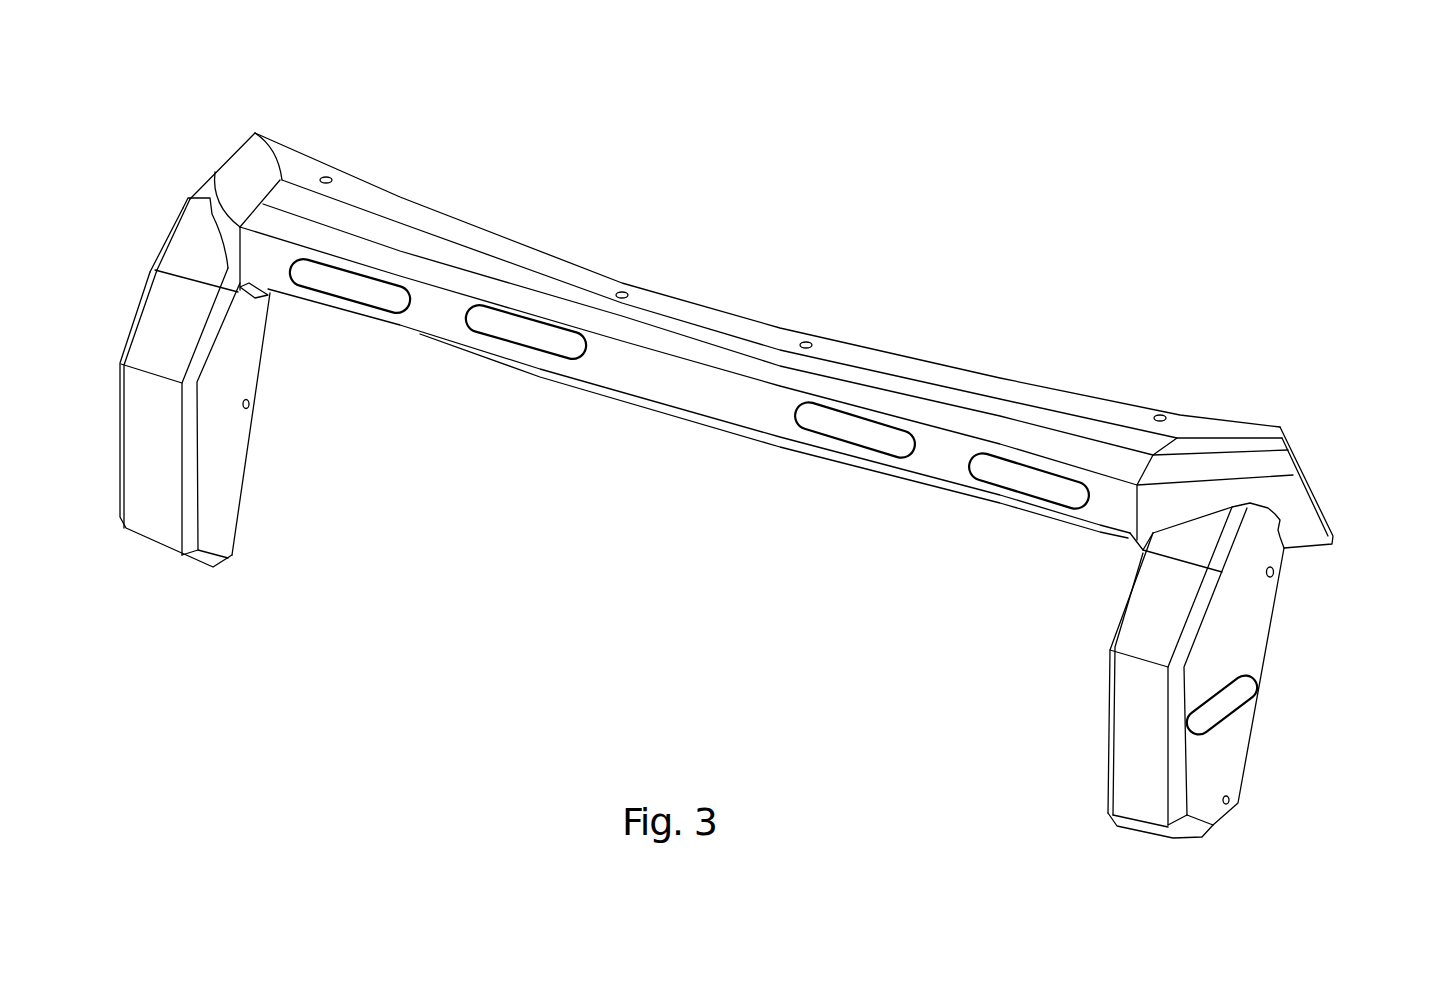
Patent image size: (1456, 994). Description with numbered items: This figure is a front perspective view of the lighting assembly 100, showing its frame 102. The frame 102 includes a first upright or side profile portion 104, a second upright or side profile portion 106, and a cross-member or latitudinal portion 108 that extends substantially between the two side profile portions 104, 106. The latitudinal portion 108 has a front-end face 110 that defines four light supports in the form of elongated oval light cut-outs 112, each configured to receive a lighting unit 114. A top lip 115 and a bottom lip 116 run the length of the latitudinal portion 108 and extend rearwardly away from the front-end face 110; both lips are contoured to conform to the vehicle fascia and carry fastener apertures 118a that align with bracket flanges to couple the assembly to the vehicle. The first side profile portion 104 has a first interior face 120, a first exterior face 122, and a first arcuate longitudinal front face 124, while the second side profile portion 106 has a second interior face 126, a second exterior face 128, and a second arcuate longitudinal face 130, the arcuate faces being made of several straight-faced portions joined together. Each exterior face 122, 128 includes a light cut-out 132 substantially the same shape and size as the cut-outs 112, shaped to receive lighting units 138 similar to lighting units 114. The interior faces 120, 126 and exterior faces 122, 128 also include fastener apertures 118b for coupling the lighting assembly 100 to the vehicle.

The lighting assembly 100 is at (958, 147).
The frame 102 is at (700, 417).
The first side profile portion 104 is at (1233, 755).
The second side profile portion 106 is at (222, 527).
The latitudinal portion 108 is at (983, 385).
The front-end face 110 is at (937, 457).
The light cut-outs 112 is at (403, 329).
The lighting unit 114 is at (352, 288).
The top lip 115 is at (749, 318).
The bottom lip 116 is at (777, 445).
The fastener apertures 118a is at (329, 170).
The fastener apertures 118b is at (258, 411).
The first interior face 120 is at (1105, 725).
The first exterior face 122 is at (1243, 612).
The first arcuate longitudinal front face 124 is at (1145, 805).
The second interior face 126 is at (232, 474).
The second exterior face 128 is at (148, 296).
The second arcuate longitudinal face 130 is at (153, 520).
The light cut-outs 132 is at (1238, 718).
The lighting units 138 is at (1243, 672).